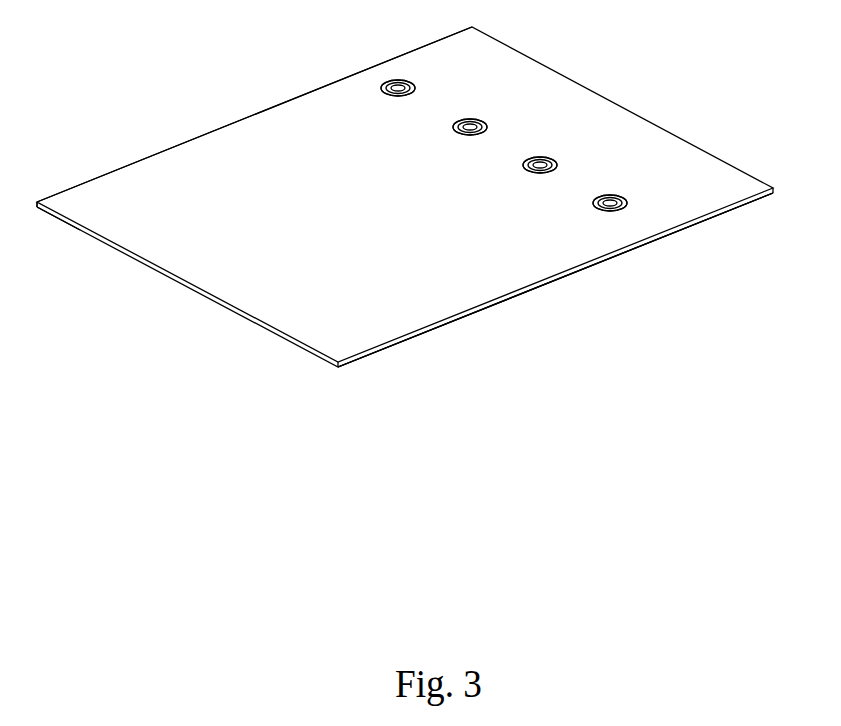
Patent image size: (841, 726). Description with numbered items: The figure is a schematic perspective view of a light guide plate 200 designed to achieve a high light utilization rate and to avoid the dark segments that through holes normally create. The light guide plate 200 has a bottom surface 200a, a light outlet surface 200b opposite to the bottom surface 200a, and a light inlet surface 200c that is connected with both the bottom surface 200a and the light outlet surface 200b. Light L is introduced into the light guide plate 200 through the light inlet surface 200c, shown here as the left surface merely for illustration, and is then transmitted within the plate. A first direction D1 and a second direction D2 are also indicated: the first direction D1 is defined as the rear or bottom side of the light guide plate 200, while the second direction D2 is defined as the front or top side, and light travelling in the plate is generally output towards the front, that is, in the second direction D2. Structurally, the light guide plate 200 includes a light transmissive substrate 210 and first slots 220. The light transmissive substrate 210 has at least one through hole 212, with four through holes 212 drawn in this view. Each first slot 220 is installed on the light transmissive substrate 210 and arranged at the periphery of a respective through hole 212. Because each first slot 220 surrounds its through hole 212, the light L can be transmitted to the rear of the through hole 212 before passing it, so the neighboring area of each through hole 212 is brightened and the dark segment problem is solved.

The light guide plate 200 is at (758, 410).
The bottom surface 200a is at (285, 141).
The light outlet surface 200b is at (363, 362).
The light inlet surface 200c is at (51, 216).
The light transmissive substrate 210 is at (422, 335).
The through hole 212 is at (398, 84).
The first slot 220 is at (382, 94).
The light L is at (80, 229).
The first direction D1 is at (775, 118).
The second direction D2 is at (775, 218).